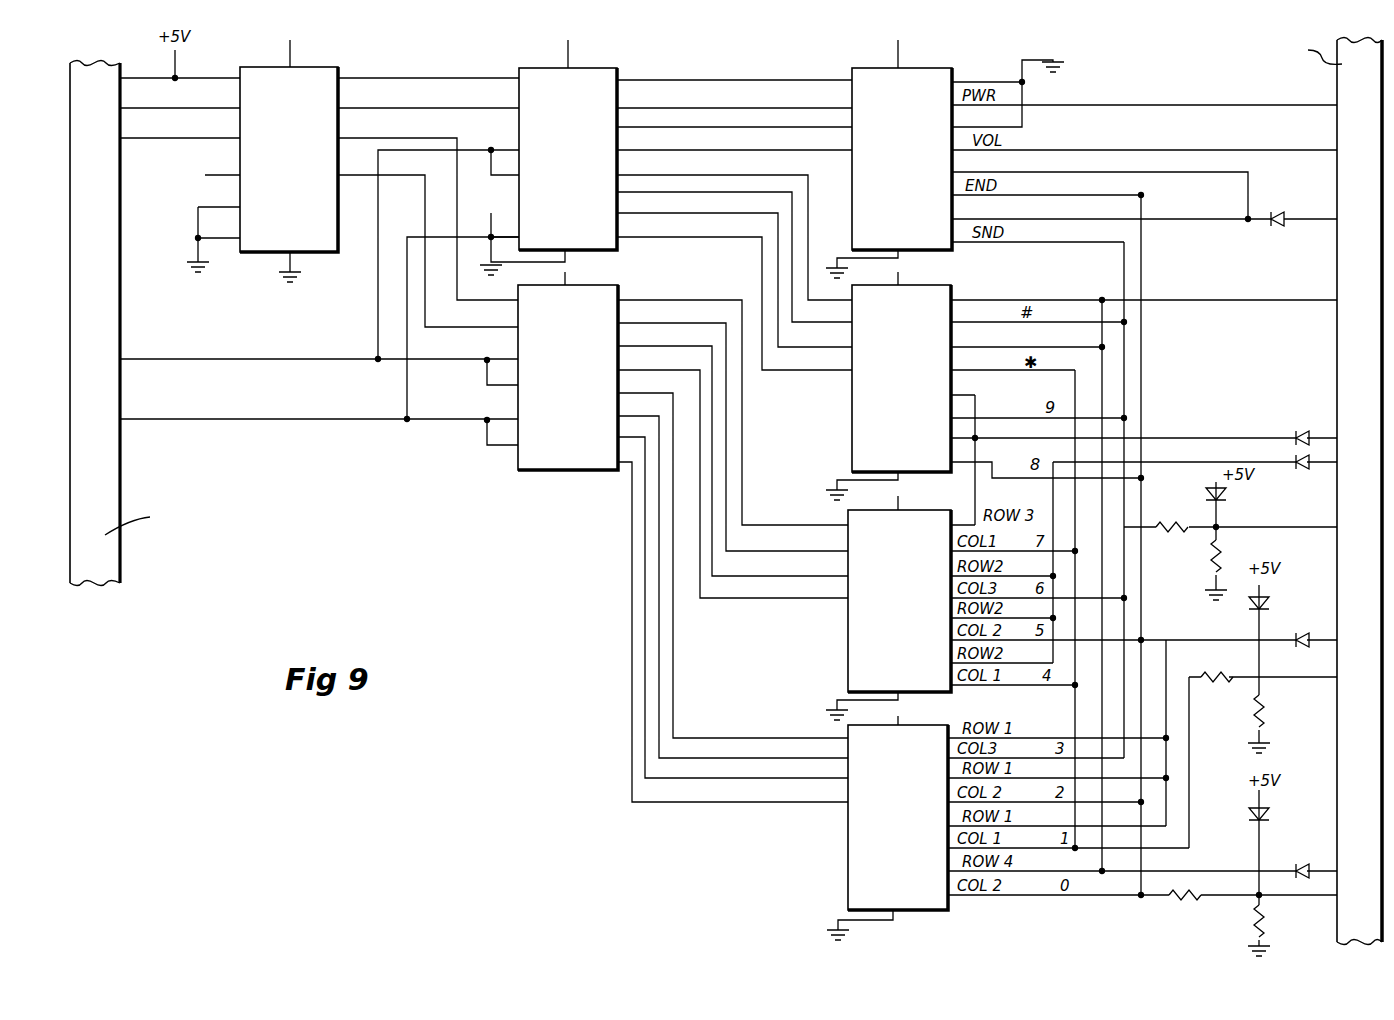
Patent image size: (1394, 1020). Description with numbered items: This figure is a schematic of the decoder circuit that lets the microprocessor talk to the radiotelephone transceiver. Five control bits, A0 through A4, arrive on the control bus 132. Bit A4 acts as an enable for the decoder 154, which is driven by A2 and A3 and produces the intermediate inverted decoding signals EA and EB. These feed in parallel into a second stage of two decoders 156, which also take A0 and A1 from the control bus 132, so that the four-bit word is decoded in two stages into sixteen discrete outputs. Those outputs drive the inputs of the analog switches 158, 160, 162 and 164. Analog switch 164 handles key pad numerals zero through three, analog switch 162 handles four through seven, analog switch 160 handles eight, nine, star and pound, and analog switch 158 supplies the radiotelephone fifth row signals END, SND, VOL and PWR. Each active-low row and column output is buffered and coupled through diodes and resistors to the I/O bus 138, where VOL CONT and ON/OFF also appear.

The control bus 132 is at (112, 332).
The I/O bus 138 is at (1340, 382).
The decoder 154 is at (327, 68).
The decoders 156 is at (598, 70).
The analog switch 158 is at (929, 68).
The analog switch 160 is at (928, 285).
The analog switch 162 is at (848, 662).
The analog switch 164 is at (848, 847).